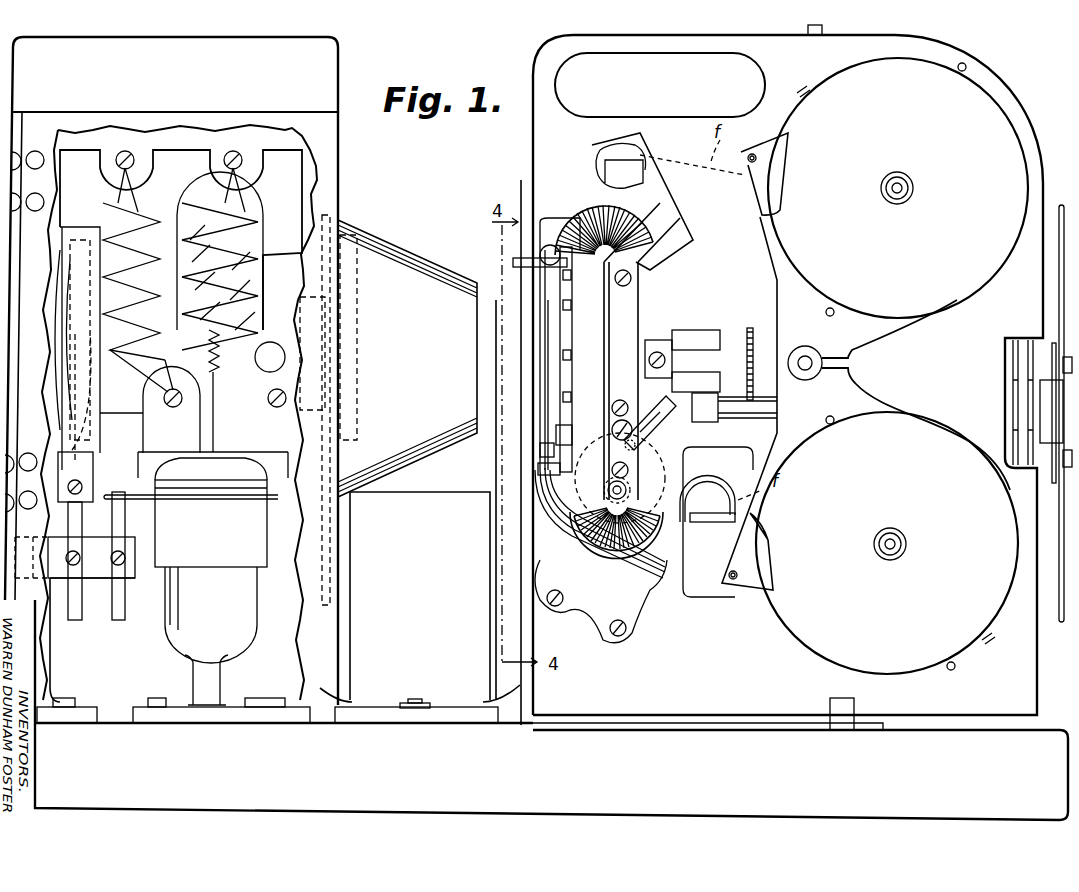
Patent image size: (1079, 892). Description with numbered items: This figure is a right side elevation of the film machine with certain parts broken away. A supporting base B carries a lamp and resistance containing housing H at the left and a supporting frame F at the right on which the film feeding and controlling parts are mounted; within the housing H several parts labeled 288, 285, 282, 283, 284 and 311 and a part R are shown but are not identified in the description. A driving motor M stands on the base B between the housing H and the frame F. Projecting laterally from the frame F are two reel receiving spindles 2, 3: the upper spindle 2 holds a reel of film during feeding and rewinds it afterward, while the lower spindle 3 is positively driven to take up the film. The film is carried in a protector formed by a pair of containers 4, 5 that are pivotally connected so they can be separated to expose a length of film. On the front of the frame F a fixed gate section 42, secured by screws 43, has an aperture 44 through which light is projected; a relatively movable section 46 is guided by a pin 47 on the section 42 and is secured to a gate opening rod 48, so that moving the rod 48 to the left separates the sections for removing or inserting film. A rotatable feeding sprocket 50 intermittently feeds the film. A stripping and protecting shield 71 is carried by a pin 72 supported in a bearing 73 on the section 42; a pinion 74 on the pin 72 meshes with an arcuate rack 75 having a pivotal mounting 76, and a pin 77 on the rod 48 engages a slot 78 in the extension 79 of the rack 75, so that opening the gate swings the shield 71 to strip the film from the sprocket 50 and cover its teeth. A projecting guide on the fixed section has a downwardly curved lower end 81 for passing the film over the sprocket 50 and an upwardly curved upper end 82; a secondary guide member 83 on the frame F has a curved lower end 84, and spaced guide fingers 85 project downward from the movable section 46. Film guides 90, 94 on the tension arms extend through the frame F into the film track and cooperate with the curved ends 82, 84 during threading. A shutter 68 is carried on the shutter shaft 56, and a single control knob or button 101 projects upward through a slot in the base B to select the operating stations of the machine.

The housing top cover 288 is at (175, 88).
The springs 285 is at (137, 215).
The lamp and resistance containing housing H is at (328, 143).
The relay R is at (75, 362).
The cylinder 282 is at (226, 500).
The rod 283 is at (118, 620).
The rod 284 is at (93, 602).
The funnel 311 is at (380, 250).
The driving motor M is at (420, 501).
The supporting base B is at (551, 710).
The knob or button 101 is at (850, 707).
The gate section 42 is at (553, 225).
The screws 43 is at (543, 251).
The pin 47 is at (513, 262).
The movable section 46 is at (562, 284).
The aperture 44 is at (558, 366).
The secondary guide member 83 is at (548, 420).
The guide fingers 85 is at (550, 475).
The curved lower end 84 is at (575, 540).
The lower end 81 is at (628, 552).
The feeding sprocket 50 is at (617, 381).
The pinion 74 is at (607, 489).
The arcuate rack 75 is at (620, 467).
The slot 78 is at (612, 404).
The pin 77 is at (657, 402).
The pivotal mounting 76 is at (637, 440).
The bearing 73 is at (630, 487).
The pin 72 is at (640, 485).
The stripping and protecting shield 71 is at (648, 490).
The upper end 82 is at (650, 205).
The film guide 90 is at (650, 172).
The extension 79 is at (662, 378).
The gate opening rod 48 is at (762, 410).
The film guide 94 is at (705, 496).
The supporting frame F is at (866, 361).
The container 4 is at (898, 188).
The reel receiving spindle 2 is at (911, 185).
The container 5 is at (887, 543).
The reel receiving spindle 3 is at (907, 545).
The shutter 68 is at (1058, 297).
The shutter shaft 56 is at (1060, 382).